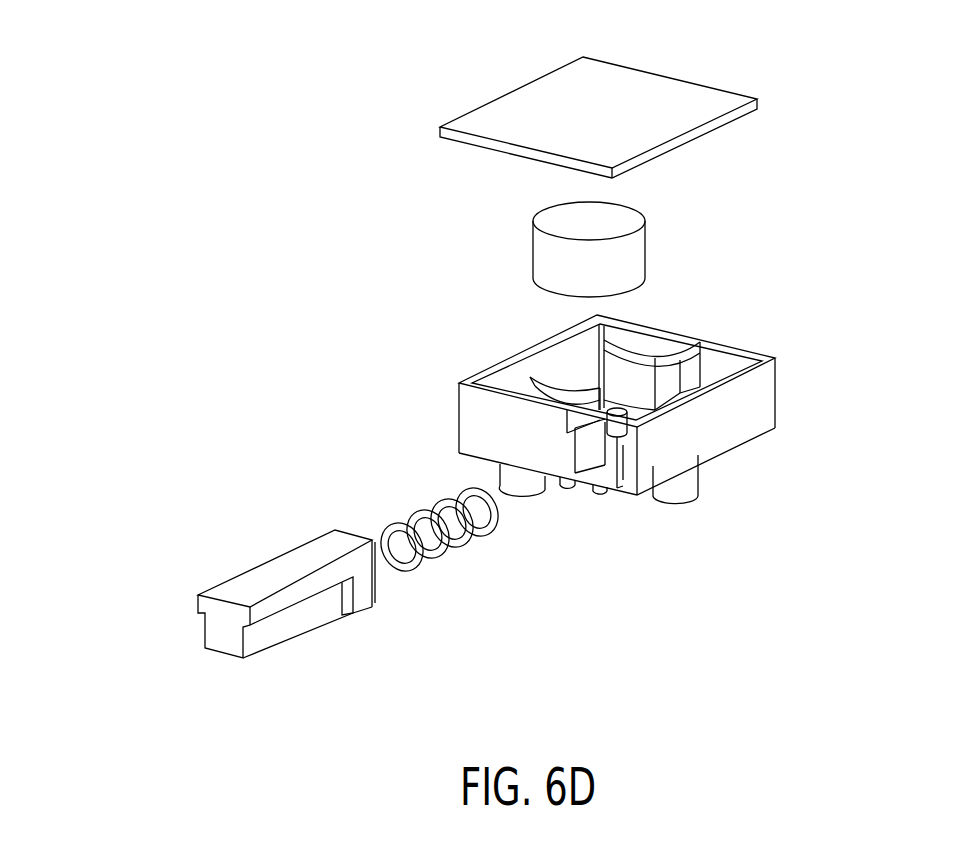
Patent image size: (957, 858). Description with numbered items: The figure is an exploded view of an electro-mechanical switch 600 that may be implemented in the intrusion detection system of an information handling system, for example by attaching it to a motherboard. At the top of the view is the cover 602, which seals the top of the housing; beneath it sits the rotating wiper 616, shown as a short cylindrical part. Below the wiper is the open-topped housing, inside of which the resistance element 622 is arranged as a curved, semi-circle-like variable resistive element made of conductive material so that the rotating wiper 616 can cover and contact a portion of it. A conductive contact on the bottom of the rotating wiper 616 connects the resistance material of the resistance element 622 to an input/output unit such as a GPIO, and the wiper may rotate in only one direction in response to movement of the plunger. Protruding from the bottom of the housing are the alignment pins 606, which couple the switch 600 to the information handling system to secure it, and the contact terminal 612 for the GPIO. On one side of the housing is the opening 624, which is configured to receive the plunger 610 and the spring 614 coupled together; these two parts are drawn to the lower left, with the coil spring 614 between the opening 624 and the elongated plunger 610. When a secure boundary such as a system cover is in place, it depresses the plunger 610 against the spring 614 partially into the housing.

The electro-mechanical switch 600 is at (76, 139).
The cover 602 is at (586, 89).
The rotating wiper 616 is at (622, 232).
The resistance element 622 is at (663, 352).
The alignment pin 606 is at (617, 457).
The contact terminal 612 is at (582, 489).
The opening 624 is at (640, 533).
The spring 614 is at (451, 563).
The plunger 610 is at (286, 631).